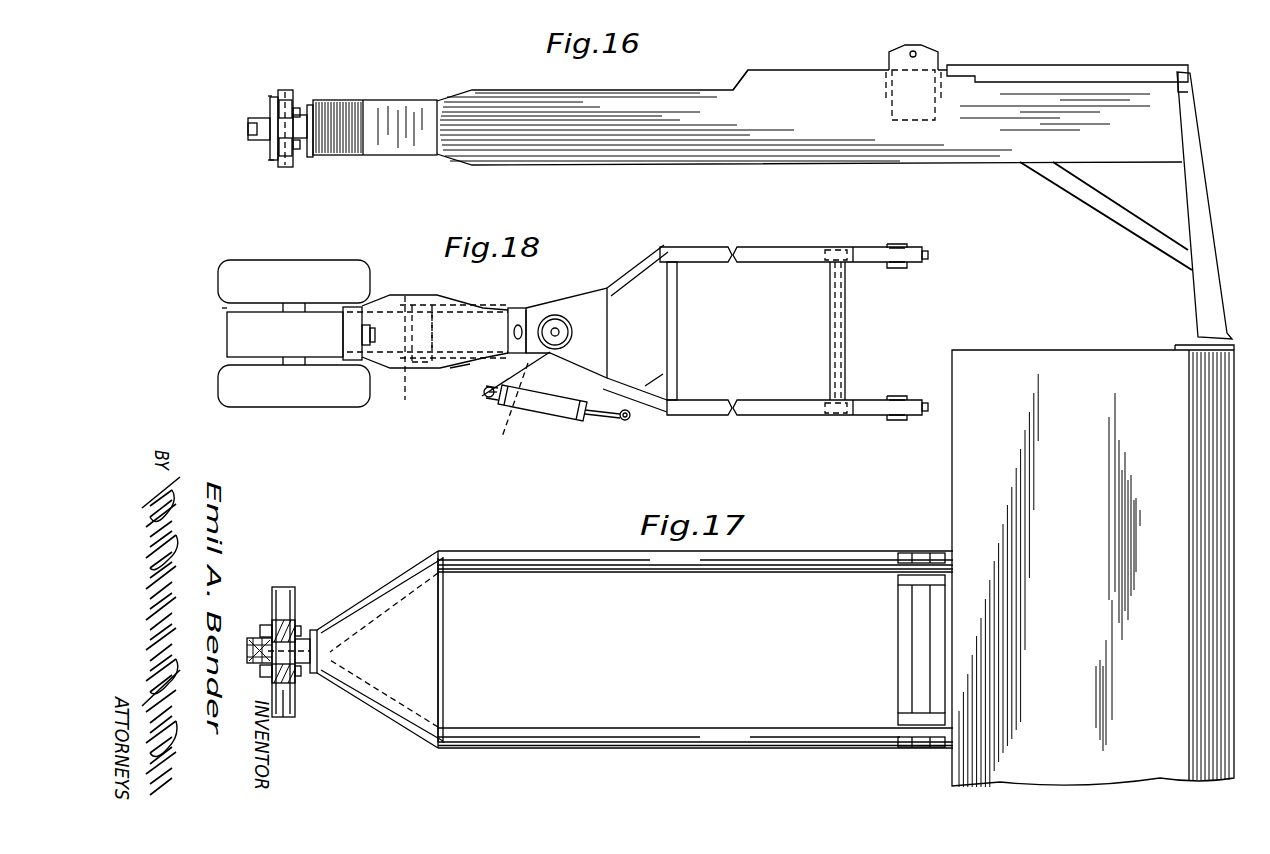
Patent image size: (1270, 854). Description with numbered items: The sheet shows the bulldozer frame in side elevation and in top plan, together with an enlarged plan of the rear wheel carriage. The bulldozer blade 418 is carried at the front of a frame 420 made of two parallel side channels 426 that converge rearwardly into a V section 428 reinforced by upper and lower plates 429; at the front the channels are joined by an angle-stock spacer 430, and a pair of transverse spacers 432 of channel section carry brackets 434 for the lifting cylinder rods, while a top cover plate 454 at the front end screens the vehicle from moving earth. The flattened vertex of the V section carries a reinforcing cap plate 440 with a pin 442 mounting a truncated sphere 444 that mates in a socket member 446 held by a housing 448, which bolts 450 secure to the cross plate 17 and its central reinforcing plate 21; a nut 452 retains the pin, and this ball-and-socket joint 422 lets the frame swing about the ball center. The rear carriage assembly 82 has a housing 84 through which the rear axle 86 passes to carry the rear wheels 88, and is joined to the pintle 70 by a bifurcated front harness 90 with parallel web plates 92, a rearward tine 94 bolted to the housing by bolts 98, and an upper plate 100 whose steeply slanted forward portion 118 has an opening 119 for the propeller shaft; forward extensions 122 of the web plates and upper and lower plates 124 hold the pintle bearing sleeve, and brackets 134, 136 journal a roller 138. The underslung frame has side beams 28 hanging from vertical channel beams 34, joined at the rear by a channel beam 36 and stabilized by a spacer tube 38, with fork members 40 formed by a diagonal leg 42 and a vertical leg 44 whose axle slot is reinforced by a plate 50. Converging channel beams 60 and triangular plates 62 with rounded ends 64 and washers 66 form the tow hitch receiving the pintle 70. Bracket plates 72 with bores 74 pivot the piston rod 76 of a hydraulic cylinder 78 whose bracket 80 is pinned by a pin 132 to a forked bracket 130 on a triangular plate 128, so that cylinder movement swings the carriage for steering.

In FIG. 16, the cross plate 17 is at (270, 97).
In FIG. 17, the cross plate 17 is at (272, 592).
In FIG. 16, the reinforcing plate 21 is at (270, 162).
In FIG. 18, the side beams 28 is at (748, 248).
In FIG. 18, the vertical channel beams 34 is at (836, 247).
In FIG. 18, the channel beam 36 is at (678, 290).
In FIG. 18, the stabilizing spacer tube 38 is at (830, 328).
In FIG. 18, the fork members 40 is at (909, 233).
In FIG. 18, the diagonal leg 42 is at (866, 262).
In FIG. 18, the vertical leg 44 is at (930, 252).
In FIG. 18, the reinforcing plate 50 is at (889, 268).
In FIG. 18, the converging channel beams 60 is at (648, 247).
In FIG. 18, the triangular plates 62 is at (588, 300).
In FIG. 18, the rounded rear ends 64 is at (533, 322).
In FIG. 18, the washers 66 is at (553, 346).
In FIG. 18, the pintle 70 is at (560, 332).
In FIG. 18, the bracket plates 72 is at (642, 412).
In FIG. 18, the bores 74 is at (624, 422).
In FIG. 18, the piston rod 76 is at (597, 416).
In FIG. 18, the hydraulic cylinder 78 is at (545, 412).
In FIG. 18, the bracket 80 is at (490, 398).
In FIG. 18, the rear carriage assembly 82 is at (215, 310).
In FIG. 18, the housing 84 is at (240, 328).
In FIG. 18, the rear axle 86 is at (294, 305).
In FIG. 18, the rear wheels 88 is at (223, 283).
In FIG. 18, the front harness 90 is at (396, 389).
In FIG. 18, the web plates 92 is at (488, 352).
In FIG. 18, the tine 94 is at (406, 300).
In FIG. 18, the bolts 98 is at (414, 333).
In FIG. 18, the upper plate 100 is at (447, 304).
In FIG. 18, the forward portion 118 is at (517, 312).
In FIG. 18, the opening 119 is at (514, 330).
In FIG. 18, the forward extensions 122 is at (506, 414).
In FIG. 18, the upper and lower plates 124 is at (528, 330).
In FIG. 18, the triangular plate 128 is at (465, 362).
In FIG. 18, the forked bracket 130 is at (490, 398).
In FIG. 18, the pin 132 is at (463, 366).
In FIG. 18, the bracket 134 is at (345, 320).
In FIG. 18, the bracket 136 is at (355, 352).
In FIG. 18, the roller 138 is at (352, 325).
In FIG. 16, the bulldozer blade 418 is at (1206, 141).
In FIG. 17, the bulldozer blade 418 is at (1208, 397).
In FIG. 16, the frame 420 is at (760, 52).
In FIG. 17, the frame 420 is at (802, 537).
In FIG. 16, the ball-and-socket joint 422 is at (286, 163).
In FIG. 17, the ball-and-socket joint 422 is at (288, 612).
In FIG. 16, the side channels 426 is at (722, 150).
In FIG. 16, the V section 428 is at (412, 140).
In FIG. 17, the V section 428 is at (405, 566).
In FIG. 16, the reinforcing plates 429 is at (410, 92).
In FIG. 17, the reinforcing plates 429 is at (420, 628).
In FIG. 16, the spacer 430 is at (1178, 88).
In FIG. 16, the transverse spacers 432 is at (918, 120).
In FIG. 17, the transverse spacers 432 is at (930, 618).
In FIG. 16, the brackets 434 is at (922, 60).
In FIG. 17, the brackets 434 is at (905, 578).
In FIG. 16, the cap plate 440 is at (309, 158).
In FIG. 17, the cap plate 440 is at (320, 660).
In FIG. 16, the pin 442 is at (302, 122).
In FIG. 17, the pin 442 is at (302, 648).
In FIG. 16, the truncated sphere 444 is at (297, 105).
In FIG. 17, the truncated sphere 444 is at (293, 638).
In FIG. 17, the socket member 446 is at (283, 690).
In FIG. 16, the housing 448 is at (281, 108).
In FIG. 17, the housing 448 is at (290, 622).
In FIG. 16, the bolts 450 is at (268, 146).
In FIG. 16, the nut 452 is at (250, 126).
In FIG. 17, the nut 452 is at (253, 640).
In FIG. 16, the cover plate 454 is at (1120, 52).
In FIG. 17, the cover plate 454 is at (1030, 375).